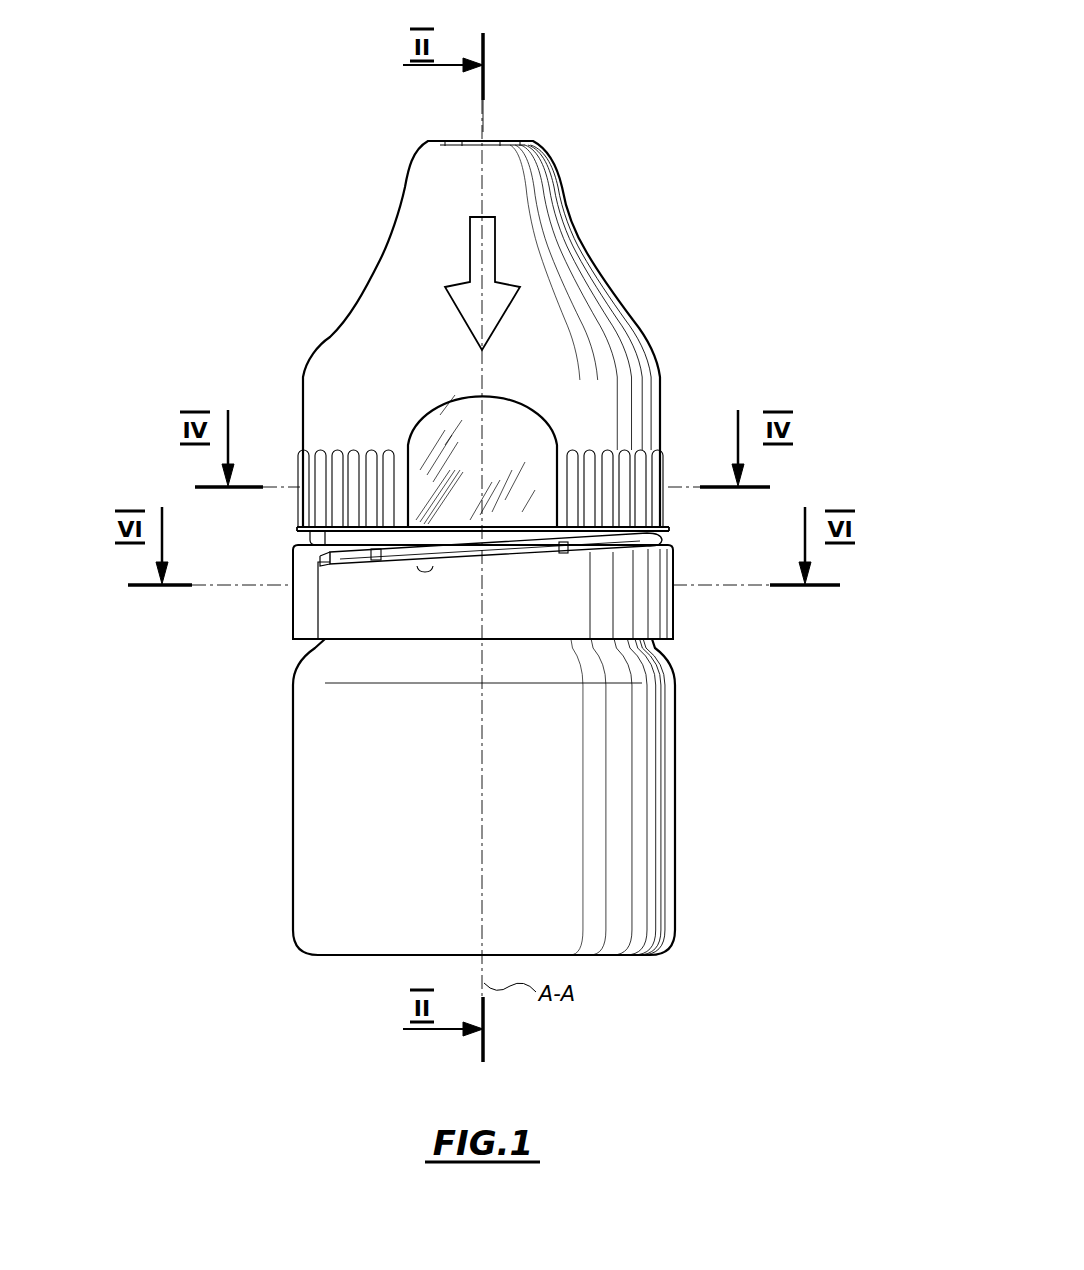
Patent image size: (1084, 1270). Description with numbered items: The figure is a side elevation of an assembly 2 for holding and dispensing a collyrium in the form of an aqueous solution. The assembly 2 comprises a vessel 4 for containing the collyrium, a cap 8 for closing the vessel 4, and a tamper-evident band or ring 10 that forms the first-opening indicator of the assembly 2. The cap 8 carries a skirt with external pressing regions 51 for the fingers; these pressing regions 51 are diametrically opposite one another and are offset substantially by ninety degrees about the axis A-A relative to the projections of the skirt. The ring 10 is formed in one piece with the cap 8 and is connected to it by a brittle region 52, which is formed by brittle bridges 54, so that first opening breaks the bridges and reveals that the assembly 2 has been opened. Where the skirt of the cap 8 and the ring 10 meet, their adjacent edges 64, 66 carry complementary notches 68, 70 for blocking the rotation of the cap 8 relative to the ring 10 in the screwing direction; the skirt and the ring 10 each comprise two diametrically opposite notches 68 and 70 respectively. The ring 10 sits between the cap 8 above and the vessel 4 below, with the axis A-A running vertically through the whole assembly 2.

The assembly 2 is at (222, 92).
The vessel 4 is at (280, 807).
The cap 8 is at (633, 301).
The tamper-evident band or ring 10 is at (690, 626).
The external pressing regions 51 is at (520, 435).
The brittle region 52 is at (688, 538).
The brittle bridges 54 is at (378, 560).
The adjacent edge 64 is at (443, 562).
The adjacent edge 66 is at (455, 564).
The notches 68 is at (318, 560).
The notches 70 is at (312, 538).